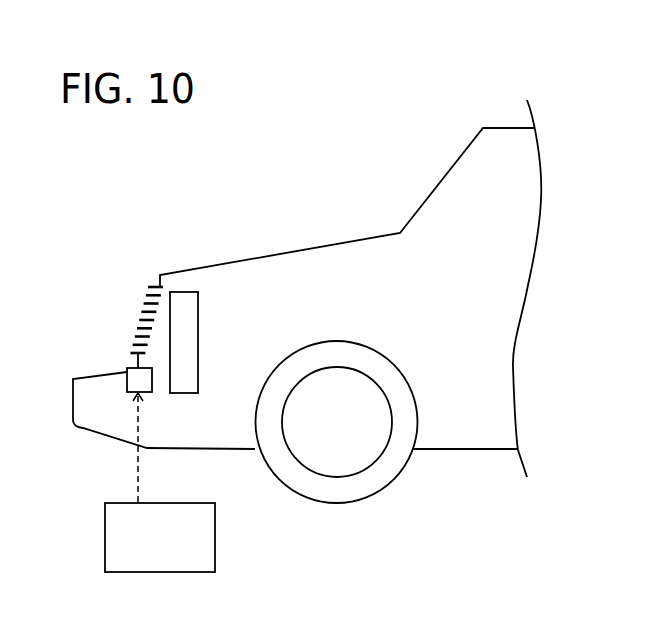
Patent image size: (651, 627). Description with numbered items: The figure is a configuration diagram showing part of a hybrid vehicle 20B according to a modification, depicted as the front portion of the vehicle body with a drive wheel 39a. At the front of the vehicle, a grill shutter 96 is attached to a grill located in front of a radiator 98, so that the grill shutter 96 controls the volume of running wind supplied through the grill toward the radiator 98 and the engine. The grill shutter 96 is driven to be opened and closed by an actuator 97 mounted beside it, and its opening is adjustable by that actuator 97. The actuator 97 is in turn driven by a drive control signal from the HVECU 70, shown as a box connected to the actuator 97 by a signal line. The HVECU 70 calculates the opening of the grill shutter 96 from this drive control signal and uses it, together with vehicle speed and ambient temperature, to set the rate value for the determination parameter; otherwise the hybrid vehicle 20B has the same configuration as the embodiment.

The hybrid vehicle 20B is at (339, 197).
The drive wheel 39a is at (335, 342).
The grill shutter 96 is at (134, 309).
The actuator 97 is at (127, 378).
The radiator 98 is at (198, 323).
The HVECU 70 is at (105, 536).